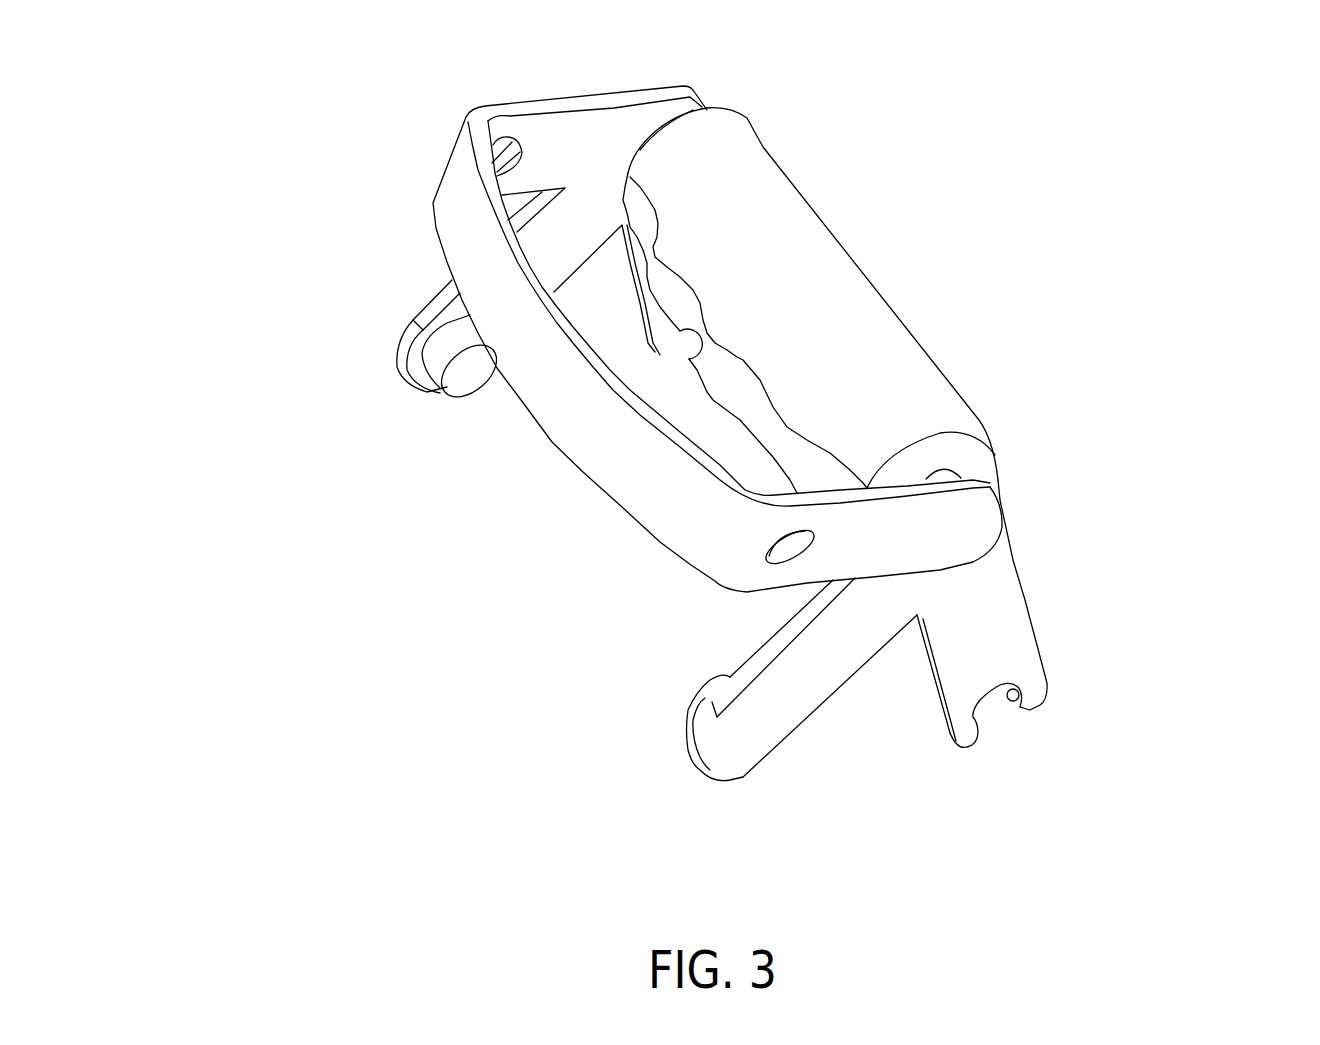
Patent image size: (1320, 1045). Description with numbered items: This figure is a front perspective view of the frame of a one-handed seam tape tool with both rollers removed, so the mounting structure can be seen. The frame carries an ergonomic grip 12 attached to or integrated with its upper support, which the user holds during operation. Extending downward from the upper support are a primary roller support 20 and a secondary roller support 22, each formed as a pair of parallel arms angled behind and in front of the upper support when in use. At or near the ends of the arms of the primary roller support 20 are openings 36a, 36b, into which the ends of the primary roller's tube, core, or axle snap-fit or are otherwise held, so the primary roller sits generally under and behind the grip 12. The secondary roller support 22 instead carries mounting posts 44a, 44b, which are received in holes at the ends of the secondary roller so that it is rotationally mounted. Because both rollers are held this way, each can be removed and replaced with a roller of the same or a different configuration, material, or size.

The ergonomic grip 12 is at (787, 253).
The primary roller support 20 is at (987, 580).
The secondary roller support 22 is at (800, 677).
The opening 36a is at (1003, 705).
The opening 36b is at (682, 333).
The mounting post 44a is at (705, 697).
The mounting post 44b is at (473, 378).